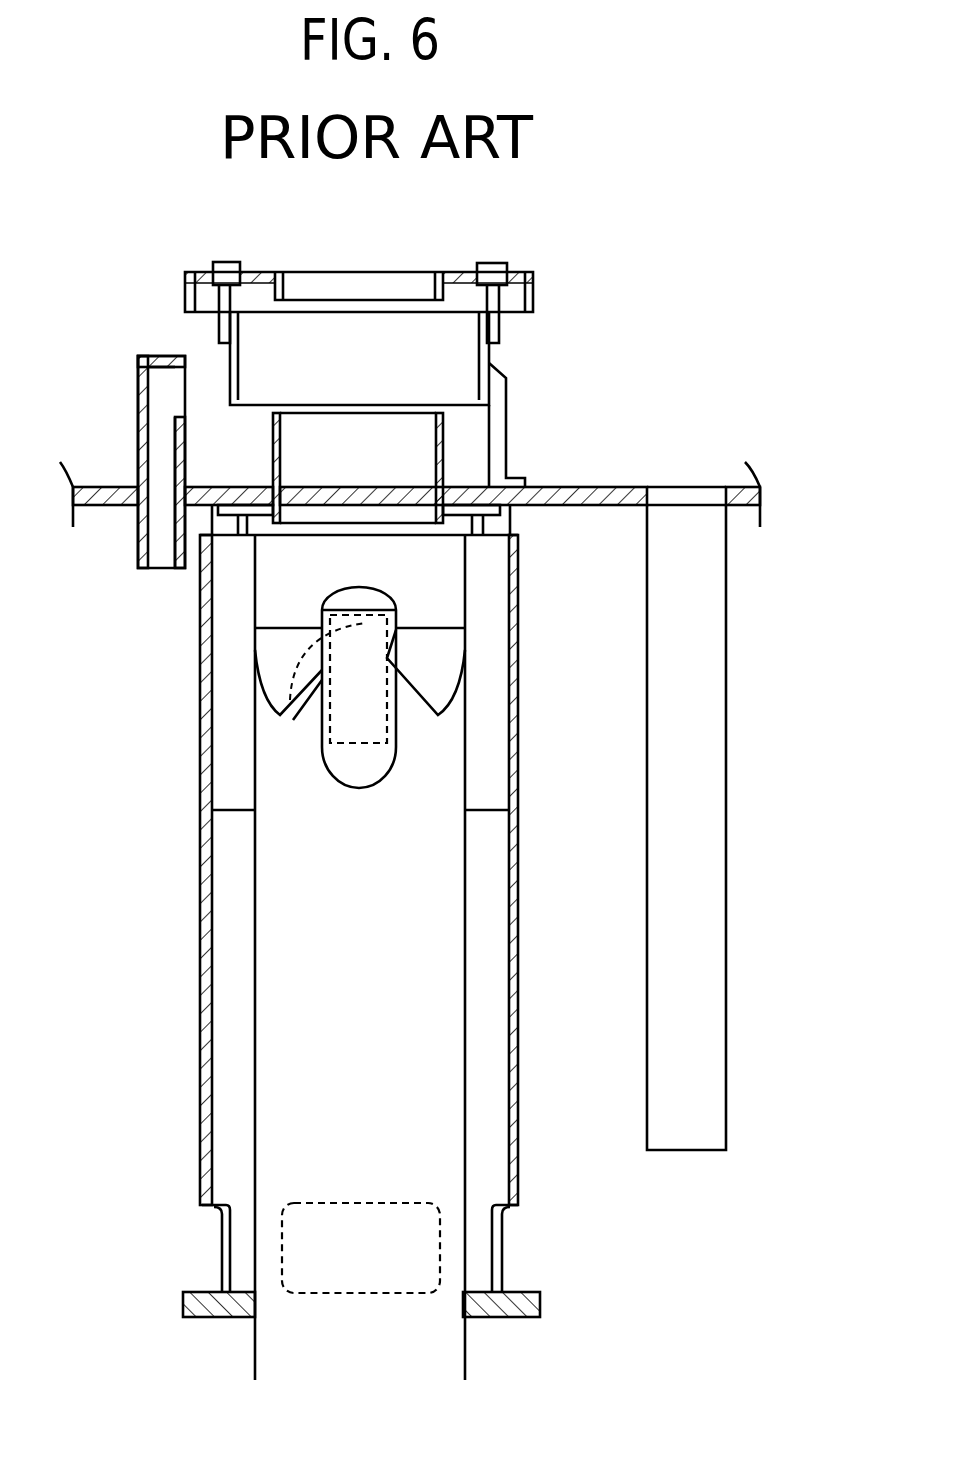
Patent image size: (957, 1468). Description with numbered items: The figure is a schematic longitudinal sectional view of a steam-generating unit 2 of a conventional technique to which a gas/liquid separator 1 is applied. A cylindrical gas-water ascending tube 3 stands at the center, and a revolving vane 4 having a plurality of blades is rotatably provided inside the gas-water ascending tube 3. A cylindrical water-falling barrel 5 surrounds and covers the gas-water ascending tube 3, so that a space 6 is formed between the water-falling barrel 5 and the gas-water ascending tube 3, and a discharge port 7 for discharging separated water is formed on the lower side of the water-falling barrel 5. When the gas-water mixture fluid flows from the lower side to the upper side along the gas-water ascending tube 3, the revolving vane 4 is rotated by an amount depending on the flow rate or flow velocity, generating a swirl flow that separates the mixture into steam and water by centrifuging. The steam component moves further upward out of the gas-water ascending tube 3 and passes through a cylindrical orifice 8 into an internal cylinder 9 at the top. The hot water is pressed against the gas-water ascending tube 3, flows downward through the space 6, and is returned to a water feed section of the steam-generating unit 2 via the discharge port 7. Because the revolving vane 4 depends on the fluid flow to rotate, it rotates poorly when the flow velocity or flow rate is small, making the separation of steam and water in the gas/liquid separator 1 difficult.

The gas/liquid separator 1 is at (380, 585).
The steam-generating unit 2 is at (515, 457).
The gas-water ascending tube 3 is at (255, 905).
The revolving vane 4 is at (360, 772).
The water-falling barrel 5 is at (515, 765).
The space 6 is at (237, 1030).
The discharge port 7 is at (222, 1243).
The cylindrical orifice 8 is at (273, 452).
The internal cylinder 9 is at (465, 350).